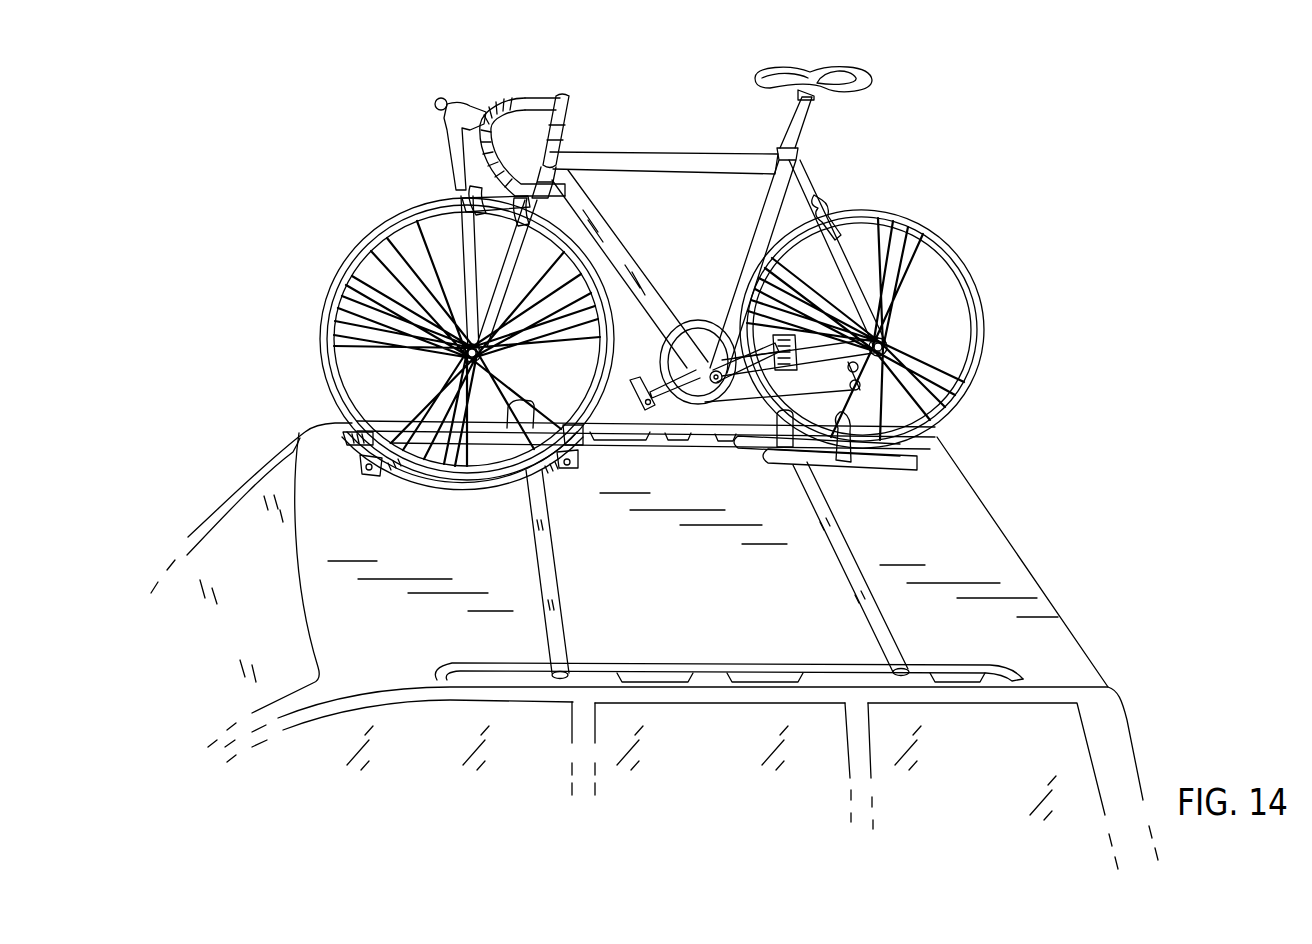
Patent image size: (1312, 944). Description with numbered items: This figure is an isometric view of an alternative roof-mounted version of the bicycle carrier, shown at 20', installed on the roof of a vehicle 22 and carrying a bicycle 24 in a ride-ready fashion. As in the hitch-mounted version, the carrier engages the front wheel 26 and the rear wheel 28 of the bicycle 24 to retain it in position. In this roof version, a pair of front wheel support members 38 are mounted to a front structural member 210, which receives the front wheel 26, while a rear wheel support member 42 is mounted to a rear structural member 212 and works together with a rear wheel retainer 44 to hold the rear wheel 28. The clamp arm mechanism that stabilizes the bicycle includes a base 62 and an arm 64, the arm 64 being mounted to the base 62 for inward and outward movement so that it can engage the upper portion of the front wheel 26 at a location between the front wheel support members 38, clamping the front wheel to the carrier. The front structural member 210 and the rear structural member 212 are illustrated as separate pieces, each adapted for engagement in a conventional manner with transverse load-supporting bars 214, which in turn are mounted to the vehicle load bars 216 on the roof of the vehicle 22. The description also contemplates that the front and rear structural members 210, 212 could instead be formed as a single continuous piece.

The roof-mounted bicycle carrier 20' is at (694, 528).
The vehicle 22 is at (1050, 546).
The bicycle 24 is at (666, 273).
The front wheel 26 is at (441, 339).
The rear wheel 28 is at (985, 276).
The front wheel support members 38 is at (368, 477).
The rear wheel support member 42 is at (895, 468).
The rear wheel retainer 44 is at (851, 416).
The base 62 is at (430, 375).
The arm 64 is at (457, 245).
The front structural member 210 is at (400, 430).
The rear structural member 212 is at (753, 457).
The transverse load-supporting bars 214 is at (556, 595).
The vehicle load bars 216 is at (990, 658).